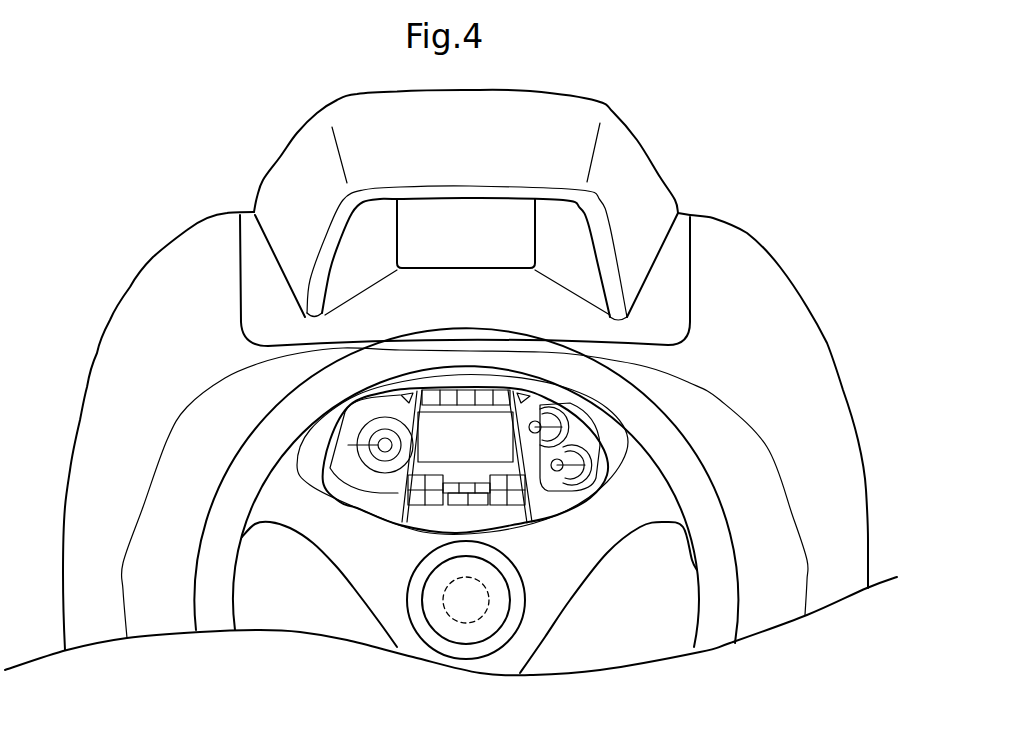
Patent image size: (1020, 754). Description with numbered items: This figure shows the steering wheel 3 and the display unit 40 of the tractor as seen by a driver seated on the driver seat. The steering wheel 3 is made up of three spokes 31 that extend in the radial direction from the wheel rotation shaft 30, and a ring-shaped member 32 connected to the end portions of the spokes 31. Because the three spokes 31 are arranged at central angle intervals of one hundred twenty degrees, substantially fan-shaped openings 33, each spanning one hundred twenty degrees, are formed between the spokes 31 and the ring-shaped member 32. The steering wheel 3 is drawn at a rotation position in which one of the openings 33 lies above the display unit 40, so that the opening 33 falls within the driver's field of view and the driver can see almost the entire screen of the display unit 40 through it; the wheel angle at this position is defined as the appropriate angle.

The steering wheel 3 is at (439, 535).
The wheel rotation shaft 30 is at (475, 622).
The spokes 31 is at (357, 570).
The ring-shaped member 32 is at (213, 602).
The openings 33 is at (616, 483).
The display unit 40 is at (580, 503).